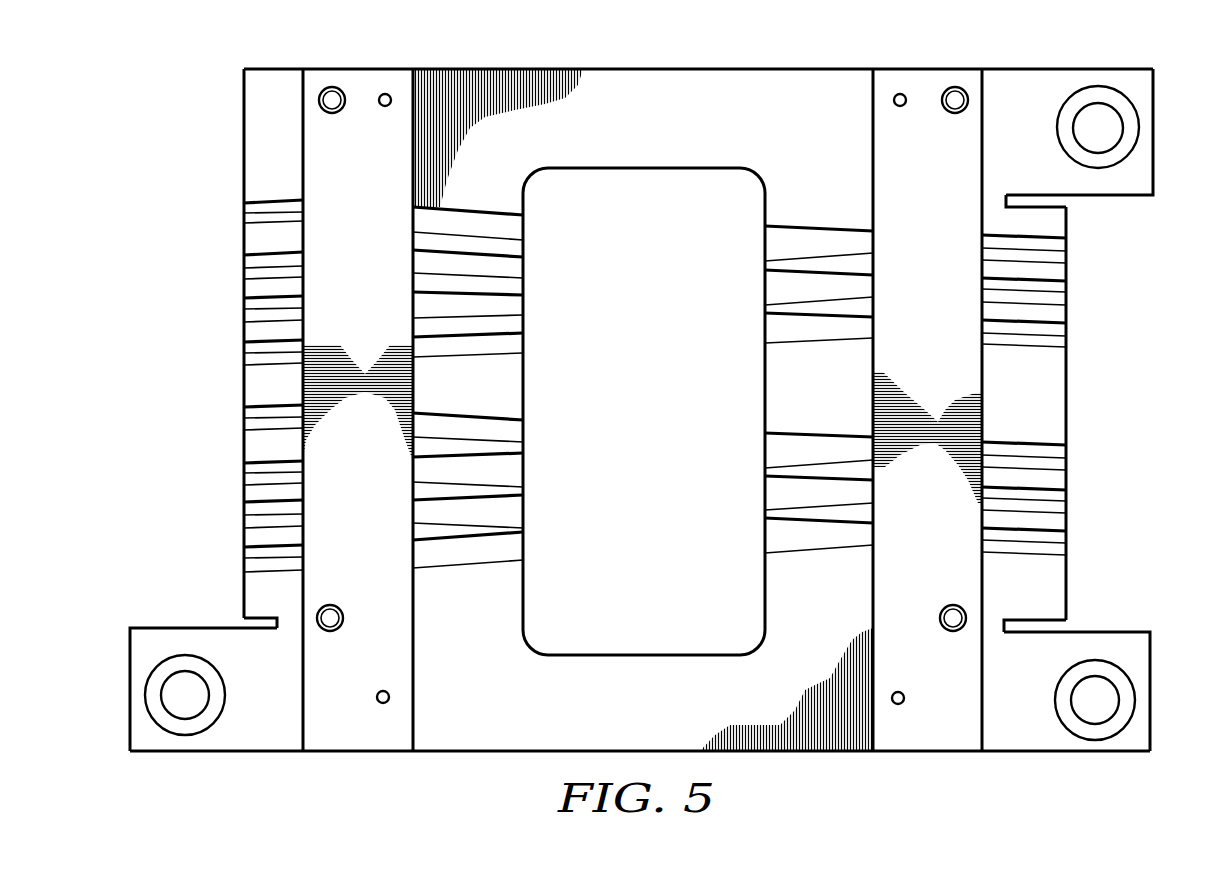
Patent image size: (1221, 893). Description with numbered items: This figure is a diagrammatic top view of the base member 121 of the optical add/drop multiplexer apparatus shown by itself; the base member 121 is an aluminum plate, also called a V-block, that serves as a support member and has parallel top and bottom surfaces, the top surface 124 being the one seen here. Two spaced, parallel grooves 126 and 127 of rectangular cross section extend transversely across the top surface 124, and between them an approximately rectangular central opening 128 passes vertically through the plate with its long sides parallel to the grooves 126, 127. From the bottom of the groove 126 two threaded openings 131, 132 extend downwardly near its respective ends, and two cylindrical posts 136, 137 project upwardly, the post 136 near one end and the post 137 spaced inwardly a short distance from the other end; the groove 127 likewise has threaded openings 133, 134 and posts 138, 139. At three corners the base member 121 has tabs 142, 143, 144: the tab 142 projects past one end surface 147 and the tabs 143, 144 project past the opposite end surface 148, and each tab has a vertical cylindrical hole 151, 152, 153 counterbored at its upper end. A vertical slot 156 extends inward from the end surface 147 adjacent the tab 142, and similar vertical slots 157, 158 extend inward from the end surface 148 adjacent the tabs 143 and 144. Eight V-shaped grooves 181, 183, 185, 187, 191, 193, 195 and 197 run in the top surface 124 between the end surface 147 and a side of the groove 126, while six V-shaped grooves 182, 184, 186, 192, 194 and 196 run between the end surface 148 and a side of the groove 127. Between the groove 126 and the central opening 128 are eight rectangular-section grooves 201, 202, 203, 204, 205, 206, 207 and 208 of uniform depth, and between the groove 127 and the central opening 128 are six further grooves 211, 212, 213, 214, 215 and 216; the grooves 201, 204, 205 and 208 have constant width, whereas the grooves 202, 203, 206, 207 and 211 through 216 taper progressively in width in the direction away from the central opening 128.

The base member 121 is at (770, 69).
The top surface 124 is at (520, 69).
The groove 126 is at (303, 737).
The groove 127 is at (982, 743).
The central opening 128 is at (645, 655).
The threaded opening 131 is at (383, 94).
The threaded opening 132 is at (380, 691).
The threaded opening 133 is at (904, 96).
The threaded opening 134 is at (900, 692).
The cylindrical post 136 is at (333, 113).
The cylindrical post 137 is at (331, 605).
The cylindrical post 138 is at (955, 113).
The cylindrical post 139 is at (952, 605).
The tab 142 is at (130, 652).
The tab 143 is at (1150, 655).
The tab 144 is at (1153, 170).
The end surface 147 is at (244, 93).
The end surface 148 is at (1066, 418).
The vertical cylindrical hole 151 is at (214, 712).
The vertical cylindrical hole 152 is at (1080, 712).
The vertical cylindrical hole 153 is at (1082, 142).
The vertical slot 156 is at (244, 618).
The vertical slot 157 is at (1066, 620).
The vertical slot 158 is at (1066, 200).
The V-shaped groove 181 is at (244, 212).
The V-shaped groove 182 is at (1066, 251).
The V-shaped groove 183 is at (244, 267).
The V-shaped groove 184 is at (1066, 292).
The V-shaped groove 185 is at (244, 310).
The V-shaped groove 186 is at (1066, 336).
The V-shaped groove 187 is at (244, 353).
The V-shaped groove 191 is at (244, 418).
The V-shaped groove 192 is at (1066, 458).
The V-shaped groove 193 is at (244, 474).
The V-shaped groove 194 is at (1066, 501).
The V-shaped groove 195 is at (244, 515).
The V-shaped groove 196 is at (1066, 543).
The V-shaped groove 197 is at (244, 558).
The groove 201 is at (509, 215).
The groove 202 is at (509, 257).
The groove 203 is at (509, 295).
The groove 204 is at (509, 333).
The groove 205 is at (509, 420).
The groove 206 is at (509, 453).
The groove 207 is at (509, 495).
The groove 208 is at (509, 532).
The groove 211 is at (779, 226).
The groove 212 is at (779, 270).
The groove 213 is at (779, 313).
The groove 214 is at (779, 433).
The groove 215 is at (779, 476).
The groove 216 is at (779, 518).